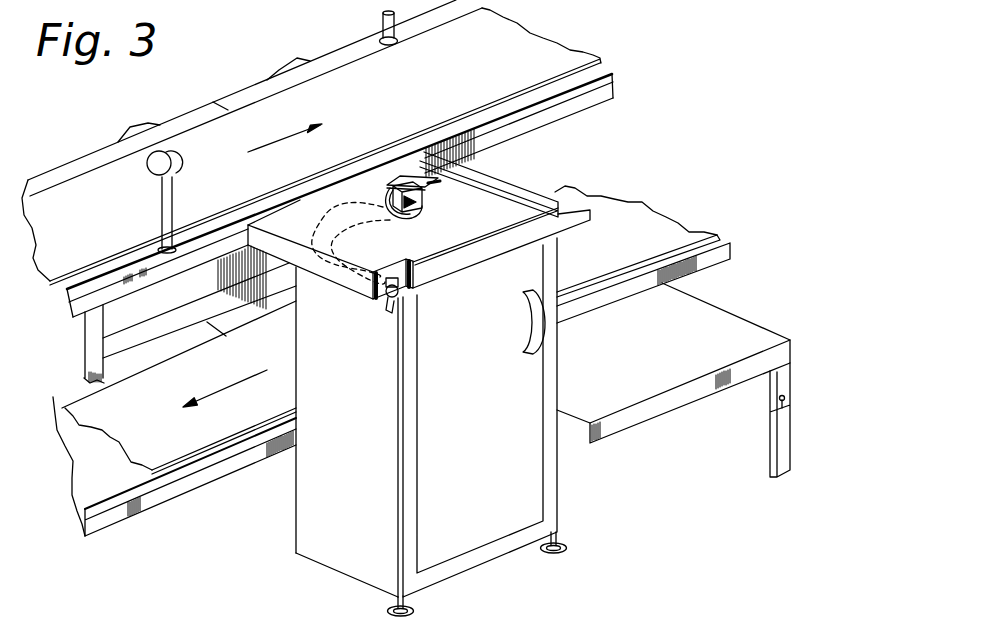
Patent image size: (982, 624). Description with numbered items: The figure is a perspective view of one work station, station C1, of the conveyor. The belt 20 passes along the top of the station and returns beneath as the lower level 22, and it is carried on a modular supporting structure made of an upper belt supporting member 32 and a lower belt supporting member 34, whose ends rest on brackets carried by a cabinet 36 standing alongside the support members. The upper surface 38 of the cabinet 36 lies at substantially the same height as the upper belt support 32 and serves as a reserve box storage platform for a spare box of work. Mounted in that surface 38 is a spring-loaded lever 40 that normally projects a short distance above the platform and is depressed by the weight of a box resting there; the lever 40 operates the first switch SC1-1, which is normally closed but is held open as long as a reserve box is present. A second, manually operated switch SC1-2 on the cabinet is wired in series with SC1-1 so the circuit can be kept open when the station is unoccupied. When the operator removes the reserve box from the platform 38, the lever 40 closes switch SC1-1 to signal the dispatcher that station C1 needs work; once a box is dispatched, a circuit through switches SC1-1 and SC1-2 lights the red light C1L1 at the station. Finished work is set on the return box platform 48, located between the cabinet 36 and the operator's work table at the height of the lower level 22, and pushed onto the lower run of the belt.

The infeed conveyor 20 is at (438, 74).
The lower level of the belt 22 is at (189, 447).
The upper belt supporting member 32 is at (568, 104).
The lower belt supporting member 34 is at (705, 268).
The cabinet 36 is at (308, 517).
The upper surface of cabinet 38 is at (505, 192).
The spring-loaded lever 40 is at (437, 181).
The return box platform 48 is at (657, 362).
The work station C1 is at (672, 138).
The red light C1L1 is at (160, 190).
The first switch SC1-1 is at (423, 212).
The second manually operated switch SC1-2 is at (383, 303).